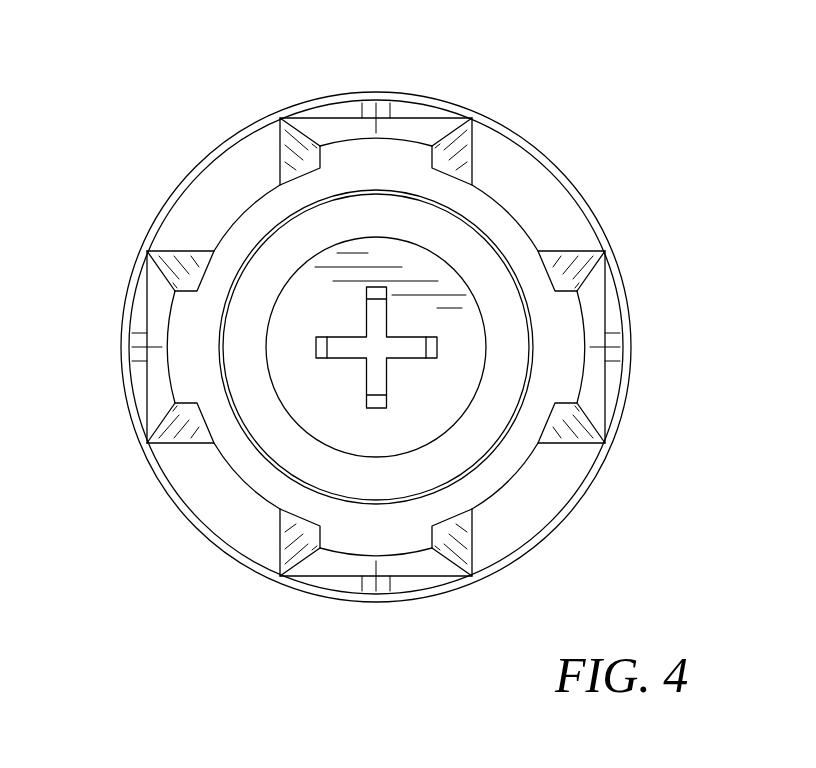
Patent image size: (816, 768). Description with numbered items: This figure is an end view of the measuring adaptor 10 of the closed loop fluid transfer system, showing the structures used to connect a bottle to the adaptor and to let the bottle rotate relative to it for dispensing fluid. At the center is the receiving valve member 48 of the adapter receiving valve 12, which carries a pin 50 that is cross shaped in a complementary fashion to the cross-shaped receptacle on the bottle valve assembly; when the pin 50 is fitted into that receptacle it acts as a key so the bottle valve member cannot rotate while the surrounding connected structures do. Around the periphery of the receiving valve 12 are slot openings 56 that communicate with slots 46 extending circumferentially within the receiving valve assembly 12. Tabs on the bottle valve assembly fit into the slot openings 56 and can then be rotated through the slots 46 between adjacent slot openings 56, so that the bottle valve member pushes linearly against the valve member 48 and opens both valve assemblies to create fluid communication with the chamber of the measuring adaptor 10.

The measuring adaptor 10 is at (642, 320).
The adapter receiving valve 12 is at (545, 193).
The slots 46 is at (377, 162).
The receiving valve member 48 is at (458, 442).
The pin 50 is at (346, 377).
The slot openings 56 is at (332, 130).